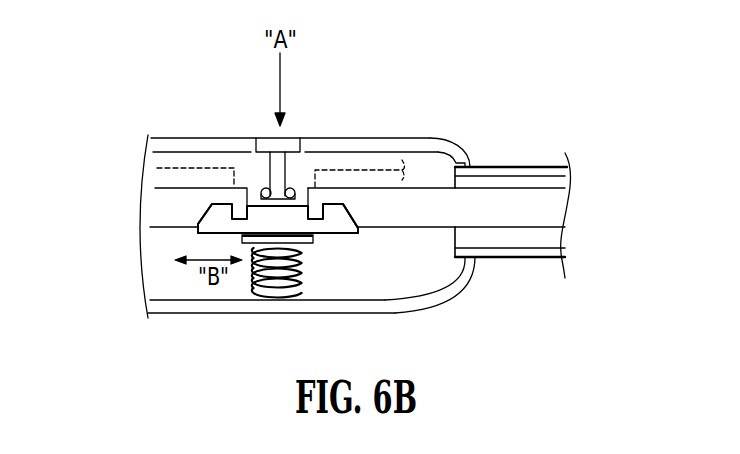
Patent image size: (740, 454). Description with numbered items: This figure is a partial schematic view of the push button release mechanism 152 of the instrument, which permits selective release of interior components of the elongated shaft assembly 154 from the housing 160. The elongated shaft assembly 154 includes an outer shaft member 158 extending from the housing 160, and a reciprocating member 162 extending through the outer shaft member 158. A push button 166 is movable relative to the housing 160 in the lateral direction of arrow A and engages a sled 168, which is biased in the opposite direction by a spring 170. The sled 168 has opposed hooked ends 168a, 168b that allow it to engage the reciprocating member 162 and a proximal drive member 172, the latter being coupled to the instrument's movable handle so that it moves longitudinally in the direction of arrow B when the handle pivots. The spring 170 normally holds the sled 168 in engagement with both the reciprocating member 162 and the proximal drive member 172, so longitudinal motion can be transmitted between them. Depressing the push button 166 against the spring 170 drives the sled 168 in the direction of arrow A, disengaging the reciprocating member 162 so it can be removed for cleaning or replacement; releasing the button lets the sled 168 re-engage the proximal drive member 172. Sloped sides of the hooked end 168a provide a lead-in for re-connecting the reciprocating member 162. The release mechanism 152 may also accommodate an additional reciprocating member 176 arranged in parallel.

The push button release mechanism 152 is at (309, 100).
The elongated shaft assembly 154 is at (527, 149).
The outer shaft member 158 is at (510, 259).
The housing 160 is at (432, 136).
The reciprocating member 162 is at (420, 222).
The push button 166 is at (263, 137).
The sled 168 is at (296, 228).
The hooked end 168a is at (337, 222).
The hooked end 168b is at (207, 232).
The spring 170 is at (276, 290).
The proximal drive member 172 is at (167, 205).
The additional reciprocating member 176 is at (382, 167).